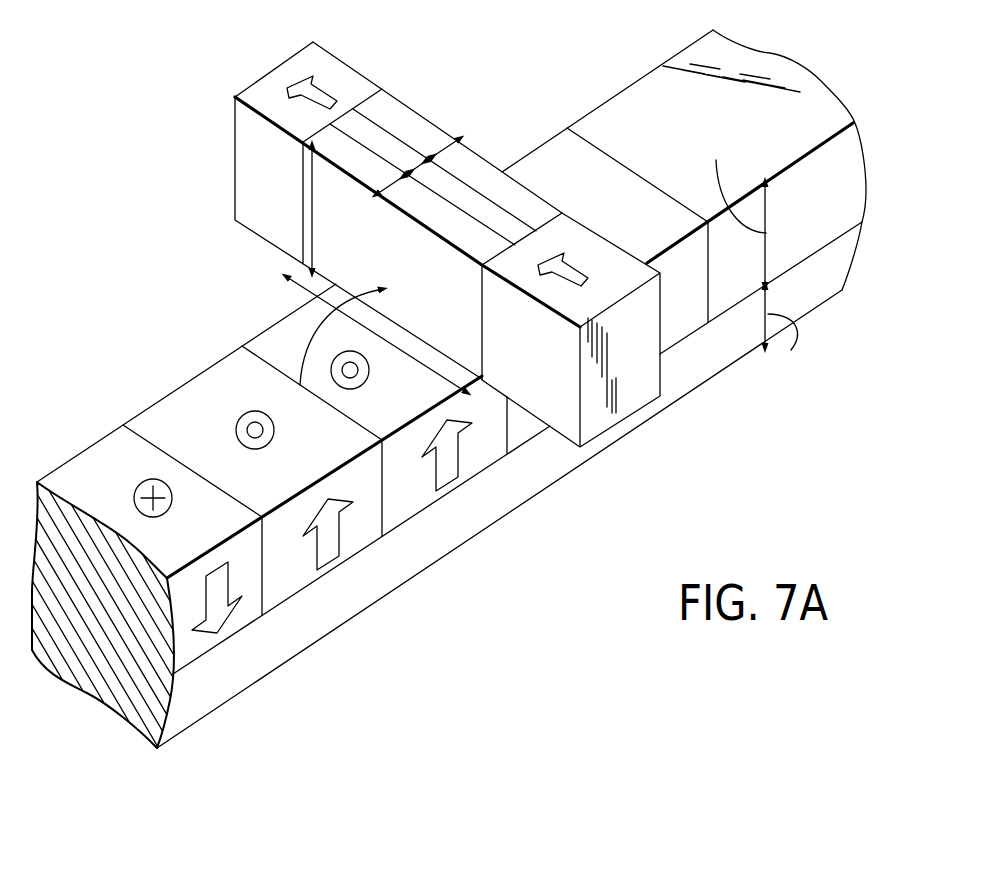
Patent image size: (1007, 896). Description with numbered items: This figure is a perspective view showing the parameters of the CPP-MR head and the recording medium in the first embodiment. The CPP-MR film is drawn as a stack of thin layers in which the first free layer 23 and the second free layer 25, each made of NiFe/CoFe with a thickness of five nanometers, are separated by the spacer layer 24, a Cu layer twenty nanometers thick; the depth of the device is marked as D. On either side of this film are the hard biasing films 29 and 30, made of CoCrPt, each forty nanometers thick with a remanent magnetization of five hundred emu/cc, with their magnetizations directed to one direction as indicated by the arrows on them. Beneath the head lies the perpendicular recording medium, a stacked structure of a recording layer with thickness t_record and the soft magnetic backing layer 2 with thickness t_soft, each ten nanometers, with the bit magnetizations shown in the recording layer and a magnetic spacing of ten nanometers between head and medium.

The soft magnetic backing layer 2 is at (228, 682).
The first free layer 23 is at (441, 146).
The spacer layer 24 is at (420, 170).
The second free layer 25 is at (392, 185).
The hard biasing film 29 is at (610, 280).
The hard biasing film 30 is at (320, 62).